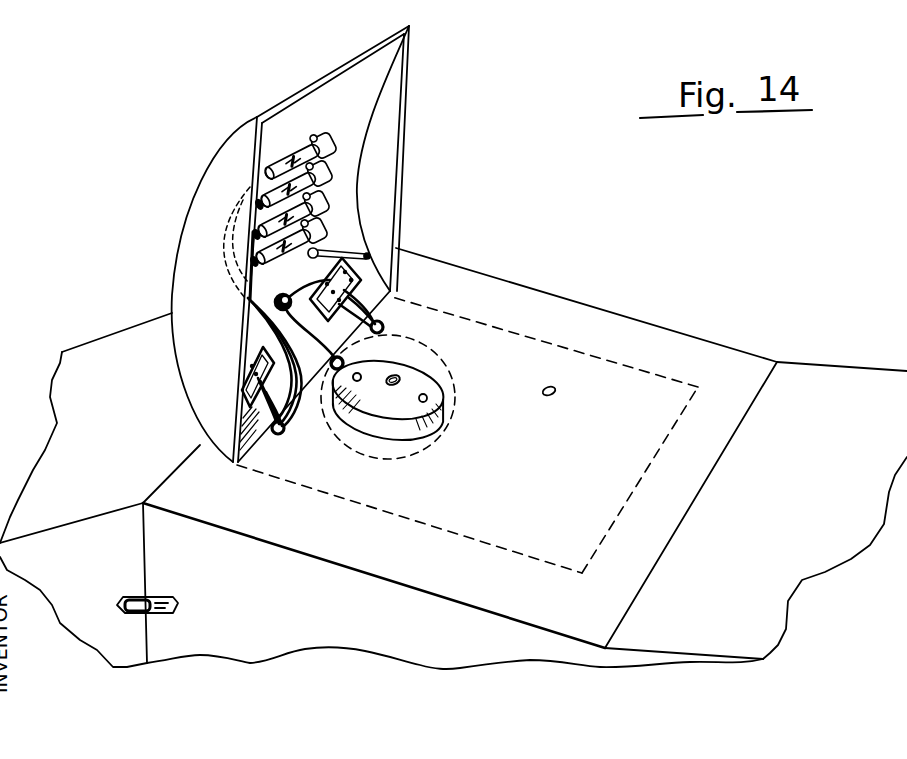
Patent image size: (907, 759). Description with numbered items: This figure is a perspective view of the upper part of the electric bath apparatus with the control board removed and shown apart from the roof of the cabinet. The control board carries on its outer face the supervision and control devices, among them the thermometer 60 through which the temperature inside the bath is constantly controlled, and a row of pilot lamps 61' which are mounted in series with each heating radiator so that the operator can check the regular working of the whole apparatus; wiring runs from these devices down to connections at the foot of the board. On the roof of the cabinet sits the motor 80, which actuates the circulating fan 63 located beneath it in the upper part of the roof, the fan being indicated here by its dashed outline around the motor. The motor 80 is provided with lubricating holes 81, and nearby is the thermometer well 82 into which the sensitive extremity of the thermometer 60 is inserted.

The thermometer 60 is at (368, 255).
The pilot lamp 61' is at (210, 227).
The circulating fan 63 is at (404, 456).
The motor 80 is at (447, 409).
The lubricating holes 81 is at (426, 395).
The thermometer well 82 is at (555, 388).